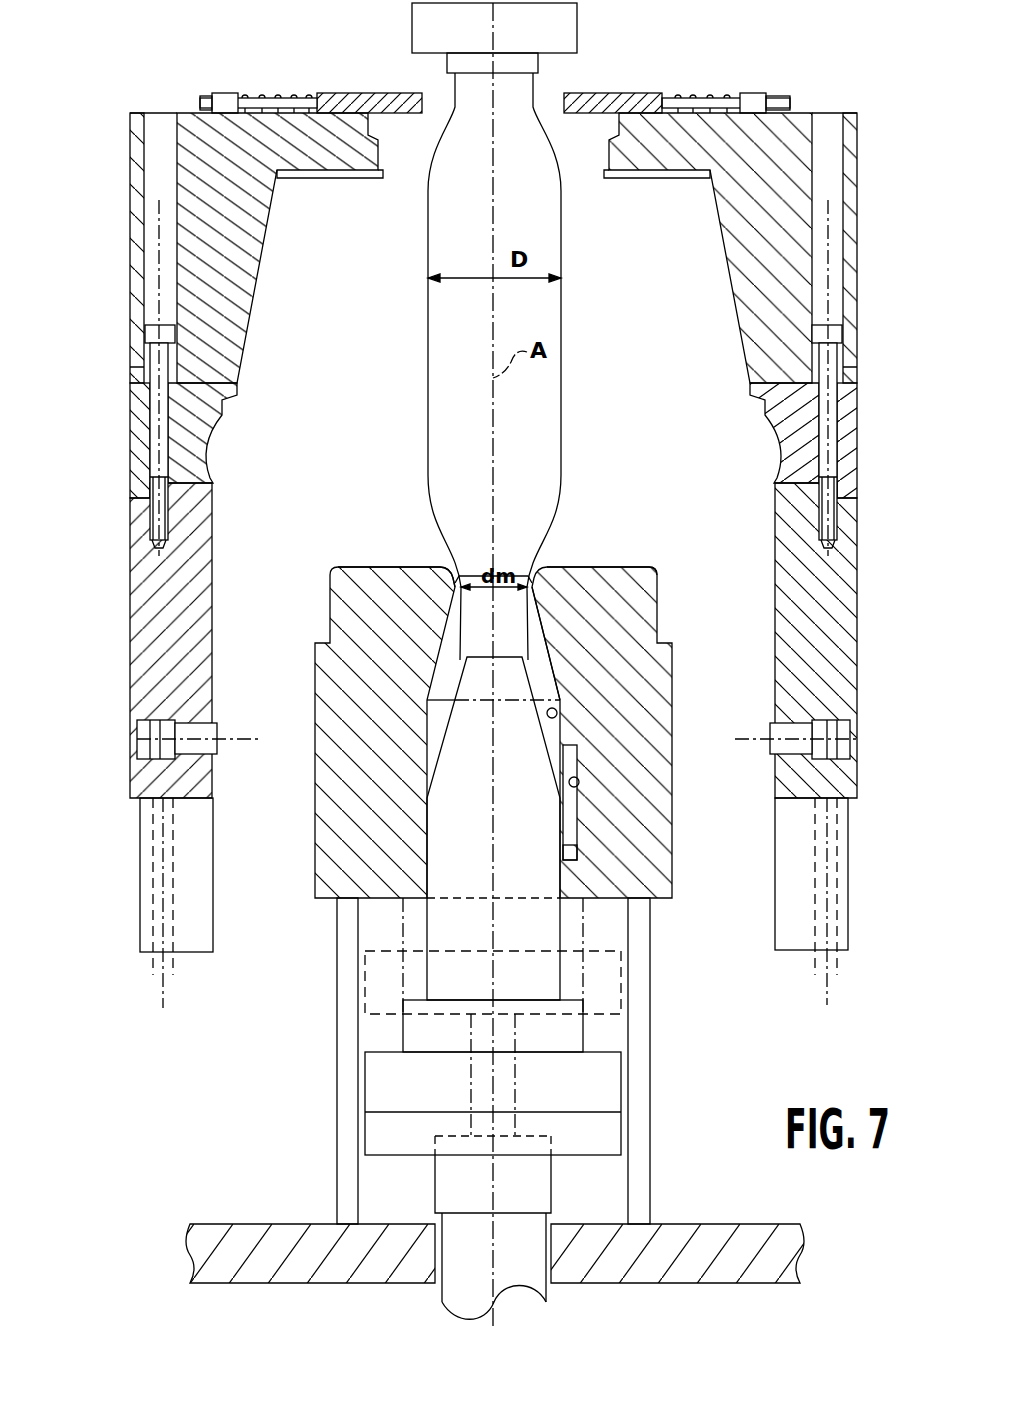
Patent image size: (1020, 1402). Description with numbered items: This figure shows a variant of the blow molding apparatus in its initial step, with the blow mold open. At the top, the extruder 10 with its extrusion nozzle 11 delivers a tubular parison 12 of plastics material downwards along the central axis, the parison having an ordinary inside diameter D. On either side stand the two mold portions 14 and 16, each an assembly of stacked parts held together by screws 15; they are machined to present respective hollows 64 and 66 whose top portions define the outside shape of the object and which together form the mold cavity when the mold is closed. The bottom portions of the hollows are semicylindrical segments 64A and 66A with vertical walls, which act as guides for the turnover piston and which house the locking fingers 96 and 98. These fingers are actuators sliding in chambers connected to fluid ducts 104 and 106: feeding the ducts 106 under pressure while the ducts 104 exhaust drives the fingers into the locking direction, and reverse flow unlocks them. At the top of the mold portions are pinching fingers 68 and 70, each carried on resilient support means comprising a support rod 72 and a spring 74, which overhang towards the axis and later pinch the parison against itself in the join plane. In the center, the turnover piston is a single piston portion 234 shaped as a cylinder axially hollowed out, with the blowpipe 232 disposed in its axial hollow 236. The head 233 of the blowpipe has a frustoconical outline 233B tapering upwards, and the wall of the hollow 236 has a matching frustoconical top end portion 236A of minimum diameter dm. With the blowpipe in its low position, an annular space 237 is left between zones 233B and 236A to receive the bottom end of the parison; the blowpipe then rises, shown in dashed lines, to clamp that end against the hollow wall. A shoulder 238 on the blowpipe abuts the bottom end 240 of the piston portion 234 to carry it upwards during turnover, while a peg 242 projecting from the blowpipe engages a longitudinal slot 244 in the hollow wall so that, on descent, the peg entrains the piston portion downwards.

The extruder 10 is at (418, 22).
The extrusion nozzle 11 is at (540, 62).
The tubular parison 12 is at (548, 222).
The mold portion 14 is at (790, 118).
The screws 15 is at (828, 380).
The mold portion 16 is at (205, 115).
The hollow 64 is at (687, 313).
The semicylindrical segment 64A is at (775, 520).
The hollow 66 is at (330, 313).
The semicylindrical segment 66A is at (213, 530).
The pinching finger 68 is at (632, 94).
The pinching finger 70 is at (338, 94).
The support rod 72 is at (745, 97).
The spring 74 is at (695, 97).
The locking finger 96 is at (828, 722).
The locking finger 98 is at (162, 722).
The fluid exhaust duct 104 is at (494, 914).
The fluid feed duct 106 is at (145, 975).
The blowpipe 232 is at (479, 868).
The head 233 is at (547, 675).
The frustoconical outline 233B is at (440, 668).
The piston portion 234 is at (665, 785).
The axial hollow 236 is at (556, 711).
The top end portion of hollow wall 236A is at (440, 570).
The annular space 237 is at (568, 582).
The shoulder 238 is at (403, 925).
The bottom end of piston portion 240 is at (575, 900).
The peg 242 is at (572, 852).
The longitudinal slot 244 is at (578, 781).